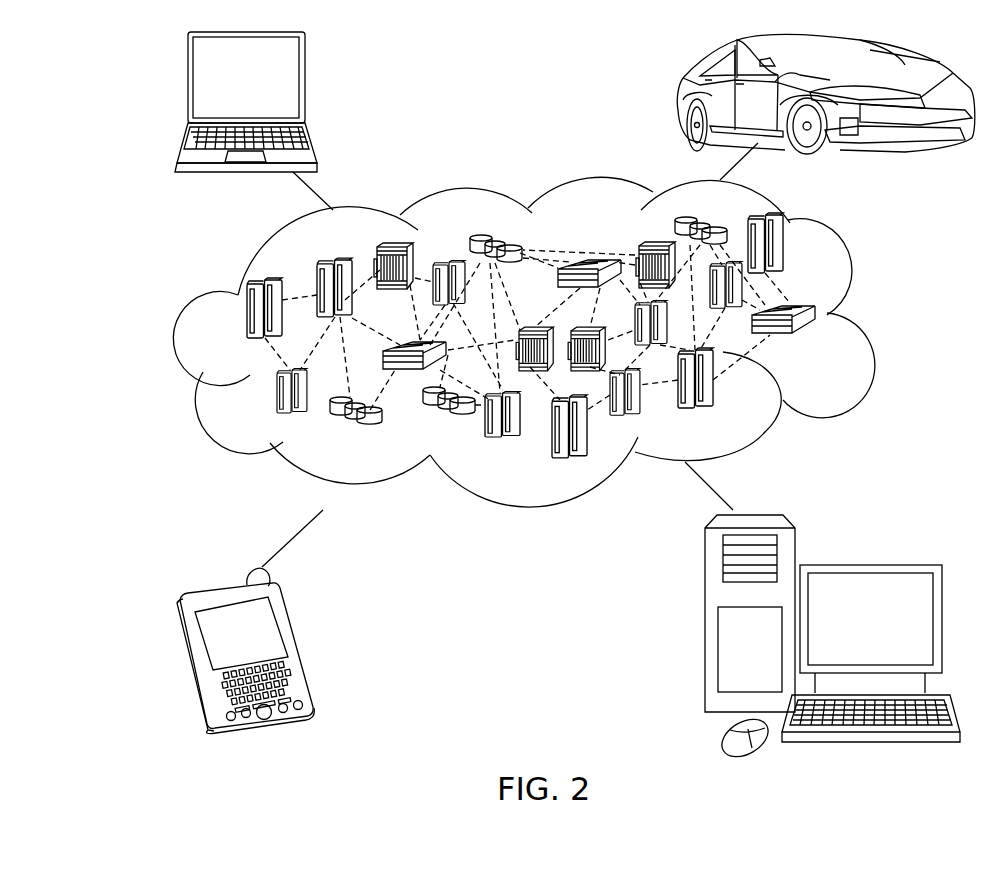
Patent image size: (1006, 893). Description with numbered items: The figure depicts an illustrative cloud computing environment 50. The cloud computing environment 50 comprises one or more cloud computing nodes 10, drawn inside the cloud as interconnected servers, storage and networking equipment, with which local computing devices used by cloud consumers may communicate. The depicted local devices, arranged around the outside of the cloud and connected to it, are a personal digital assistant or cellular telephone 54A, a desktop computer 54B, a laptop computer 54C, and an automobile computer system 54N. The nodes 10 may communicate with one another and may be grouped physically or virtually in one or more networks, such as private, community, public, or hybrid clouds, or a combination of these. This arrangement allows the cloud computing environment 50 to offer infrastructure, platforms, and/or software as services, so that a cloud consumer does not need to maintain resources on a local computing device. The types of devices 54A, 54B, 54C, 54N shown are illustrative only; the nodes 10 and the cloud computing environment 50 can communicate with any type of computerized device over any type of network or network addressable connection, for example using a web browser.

The cloud computing nodes 10 is at (820, 343).
The cloud computing environment 50 is at (868, 318).
The personal digital assistant or cellular telephone 54A is at (295, 645).
The desktop computer 54B is at (868, 565).
The laptop computer 54C is at (305, 83).
The automobile computer system 54N is at (682, 97).